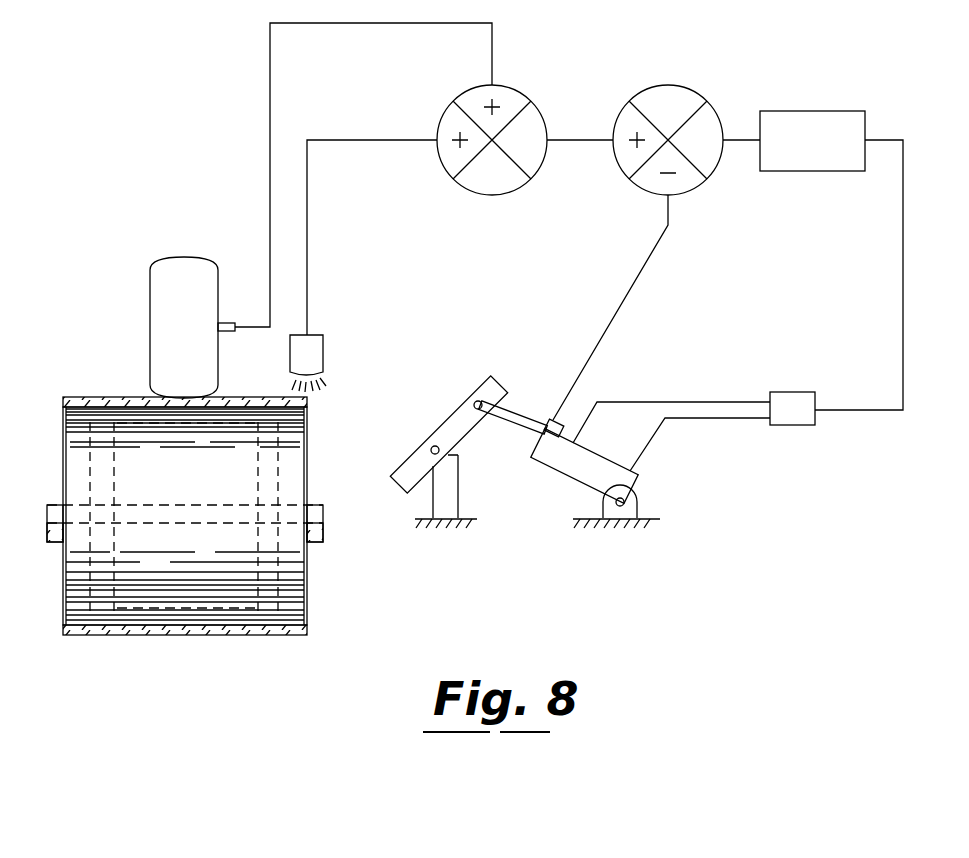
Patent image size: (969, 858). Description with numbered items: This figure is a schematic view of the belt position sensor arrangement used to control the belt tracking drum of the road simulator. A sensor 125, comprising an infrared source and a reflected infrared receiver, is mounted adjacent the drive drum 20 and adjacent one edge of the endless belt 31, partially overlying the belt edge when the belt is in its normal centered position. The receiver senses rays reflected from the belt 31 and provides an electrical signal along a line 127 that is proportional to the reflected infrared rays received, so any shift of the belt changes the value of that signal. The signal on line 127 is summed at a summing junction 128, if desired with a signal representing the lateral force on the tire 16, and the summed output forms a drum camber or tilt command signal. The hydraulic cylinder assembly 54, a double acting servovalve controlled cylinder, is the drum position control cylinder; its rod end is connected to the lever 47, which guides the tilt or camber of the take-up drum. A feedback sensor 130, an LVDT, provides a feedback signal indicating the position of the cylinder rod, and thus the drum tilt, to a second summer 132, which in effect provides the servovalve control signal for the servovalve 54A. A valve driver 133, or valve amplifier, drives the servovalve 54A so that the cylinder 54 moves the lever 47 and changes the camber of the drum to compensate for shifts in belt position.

The tire 16 is at (150, 328).
The drive drum 20 is at (290, 562).
The belt 31 is at (300, 400).
The lever 47 is at (458, 410).
The hydraulic cylinder assembly 54 is at (553, 472).
The servovalve 54A is at (793, 392).
The sensor 125 is at (323, 355).
The line 127 is at (345, 140).
The summing junction 128 is at (492, 85).
The feedback sensor 130 is at (555, 420).
The second summer 132 is at (690, 88).
The valve driver 133 is at (807, 111).